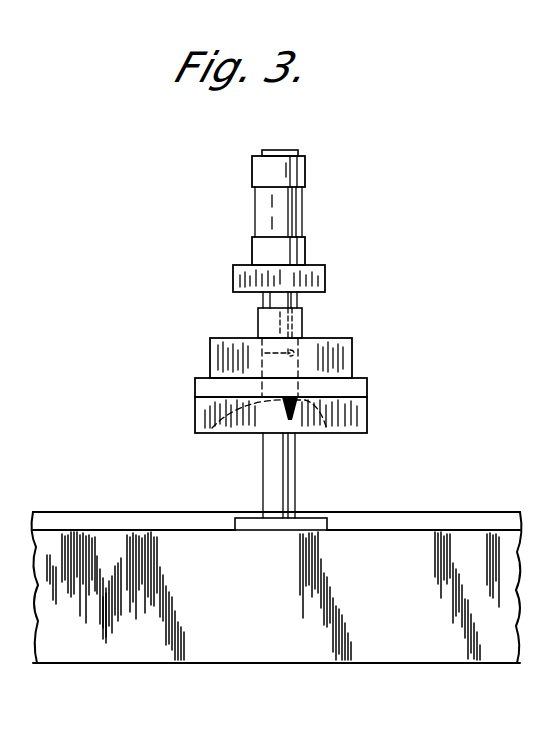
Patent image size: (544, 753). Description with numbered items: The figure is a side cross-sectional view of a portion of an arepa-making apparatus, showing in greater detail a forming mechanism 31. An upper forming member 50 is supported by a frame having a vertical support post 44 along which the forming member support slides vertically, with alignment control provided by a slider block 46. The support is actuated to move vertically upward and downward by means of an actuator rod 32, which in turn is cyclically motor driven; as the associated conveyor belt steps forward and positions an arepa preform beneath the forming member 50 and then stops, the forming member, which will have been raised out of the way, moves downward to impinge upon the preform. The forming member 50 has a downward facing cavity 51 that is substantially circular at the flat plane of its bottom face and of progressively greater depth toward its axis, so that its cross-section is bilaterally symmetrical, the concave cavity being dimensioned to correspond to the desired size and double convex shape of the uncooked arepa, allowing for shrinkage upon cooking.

The forming mechanism 31 is at (359, 304).
The actuator rod 32 is at (305, 202).
The vertical support post 44 is at (273, 475).
The slider block 46 is at (353, 355).
The upper forming member 50 is at (368, 418).
The downward facing cavity 51 is at (327, 432).